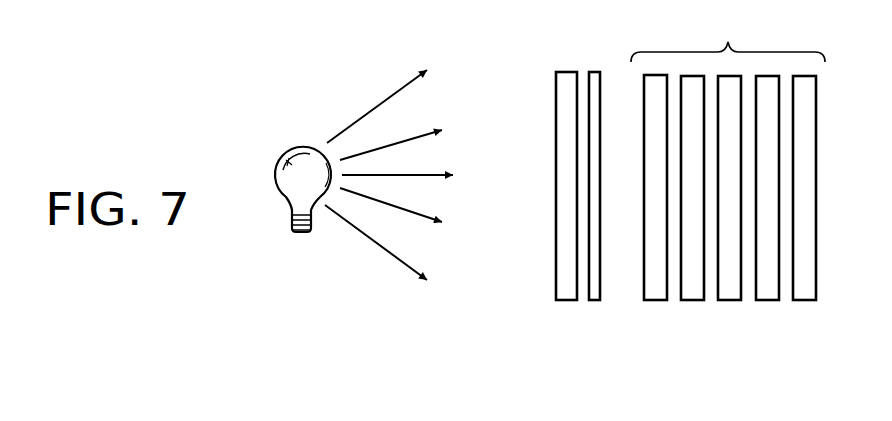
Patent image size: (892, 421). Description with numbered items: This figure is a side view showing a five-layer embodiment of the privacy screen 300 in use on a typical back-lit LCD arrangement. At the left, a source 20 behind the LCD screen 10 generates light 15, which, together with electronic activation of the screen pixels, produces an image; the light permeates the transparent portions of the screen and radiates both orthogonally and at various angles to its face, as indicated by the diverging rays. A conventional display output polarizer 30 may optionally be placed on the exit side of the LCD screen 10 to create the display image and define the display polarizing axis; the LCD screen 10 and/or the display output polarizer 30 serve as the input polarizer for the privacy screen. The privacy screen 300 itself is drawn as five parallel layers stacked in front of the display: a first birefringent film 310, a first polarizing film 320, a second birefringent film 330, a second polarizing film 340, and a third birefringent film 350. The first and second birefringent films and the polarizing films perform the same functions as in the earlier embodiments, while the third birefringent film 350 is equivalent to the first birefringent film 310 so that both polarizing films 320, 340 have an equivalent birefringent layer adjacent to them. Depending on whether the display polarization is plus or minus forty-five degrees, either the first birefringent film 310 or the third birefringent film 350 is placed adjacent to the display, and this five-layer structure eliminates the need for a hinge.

The LCD screen 10 is at (565, 300).
The light 15 is at (397, 90).
The source 20 is at (276, 152).
The display output polarizer 30 is at (594, 300).
The privacy screen 300 is at (728, 36).
The first birefringent film 310 is at (657, 300).
The first polarizing film 320 is at (693, 300).
The second birefringent film 330 is at (730, 300).
The second polarizing film 340 is at (767, 300).
The third birefringent film 350 is at (803, 300).